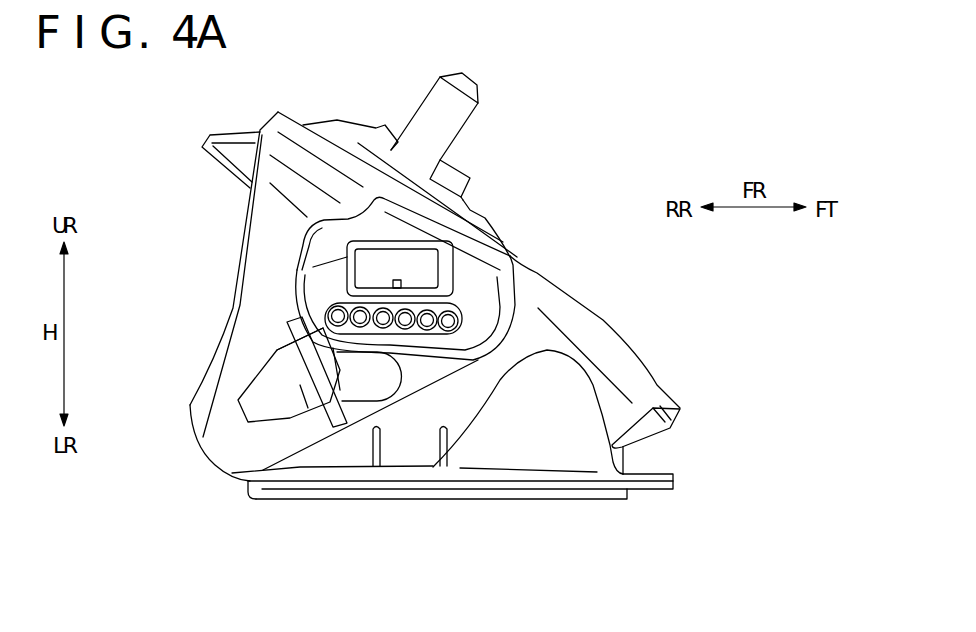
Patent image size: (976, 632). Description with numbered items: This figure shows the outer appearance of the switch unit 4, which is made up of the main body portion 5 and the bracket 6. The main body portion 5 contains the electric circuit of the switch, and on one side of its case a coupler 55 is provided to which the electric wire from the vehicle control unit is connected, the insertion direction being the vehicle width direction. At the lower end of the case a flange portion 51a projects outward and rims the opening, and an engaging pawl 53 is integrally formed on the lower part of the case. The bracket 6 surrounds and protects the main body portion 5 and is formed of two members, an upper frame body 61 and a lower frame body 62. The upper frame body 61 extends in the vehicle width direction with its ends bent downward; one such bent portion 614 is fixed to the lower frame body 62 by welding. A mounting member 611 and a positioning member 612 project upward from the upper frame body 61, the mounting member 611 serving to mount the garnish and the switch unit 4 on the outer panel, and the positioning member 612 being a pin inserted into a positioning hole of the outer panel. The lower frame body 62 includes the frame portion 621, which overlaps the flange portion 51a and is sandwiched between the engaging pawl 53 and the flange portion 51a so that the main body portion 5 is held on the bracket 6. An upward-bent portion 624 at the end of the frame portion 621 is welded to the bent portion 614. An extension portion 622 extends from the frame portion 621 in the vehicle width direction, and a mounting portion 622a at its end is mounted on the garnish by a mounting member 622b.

The switch unit 4 is at (638, 138).
The main body portion 5 is at (302, 505).
The bracket 6 is at (174, 183).
The flange portion 51a is at (545, 505).
The engaging pawl 53 is at (410, 453).
The coupler 55 is at (510, 257).
The upper frame body 61 is at (681, 404).
The lower frame body 62 is at (676, 480).
The mounting member 611 is at (470, 120).
The positioning member 612 is at (427, 118).
The portion bent downward 614 is at (533, 345).
The frame portion 621 is at (345, 472).
The extension portion 622 is at (232, 480).
The mounting portion 622a is at (262, 378).
The mounting member 622b is at (278, 325).
The portion bent upward 624 is at (577, 397).